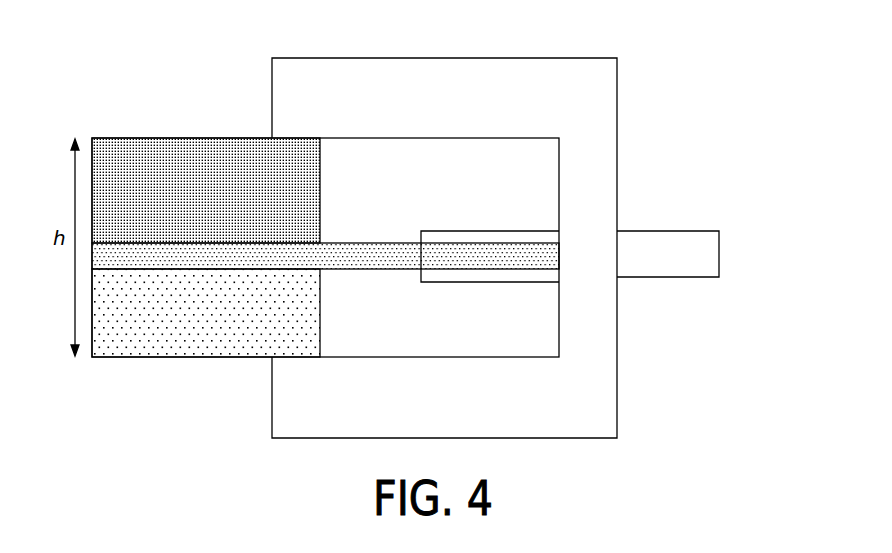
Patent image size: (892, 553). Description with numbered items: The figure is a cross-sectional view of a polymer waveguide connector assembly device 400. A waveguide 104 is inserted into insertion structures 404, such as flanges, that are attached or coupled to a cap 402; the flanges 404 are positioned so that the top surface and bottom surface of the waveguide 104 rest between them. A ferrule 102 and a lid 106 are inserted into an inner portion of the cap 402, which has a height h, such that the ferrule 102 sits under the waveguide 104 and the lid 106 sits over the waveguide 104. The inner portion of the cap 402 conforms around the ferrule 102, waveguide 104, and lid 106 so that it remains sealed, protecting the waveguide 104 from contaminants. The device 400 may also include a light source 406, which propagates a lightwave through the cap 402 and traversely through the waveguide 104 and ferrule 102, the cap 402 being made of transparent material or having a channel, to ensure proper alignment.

The polymer waveguide connector assembly device 400 is at (683, 26).
The cap 402 is at (605, 150).
The insertion structures (flanges) 404 is at (547, 273).
The light source 406 is at (702, 250).
The ferrule 102 is at (185, 357).
The waveguide 104 is at (395, 242).
The lid 106 is at (196, 138).